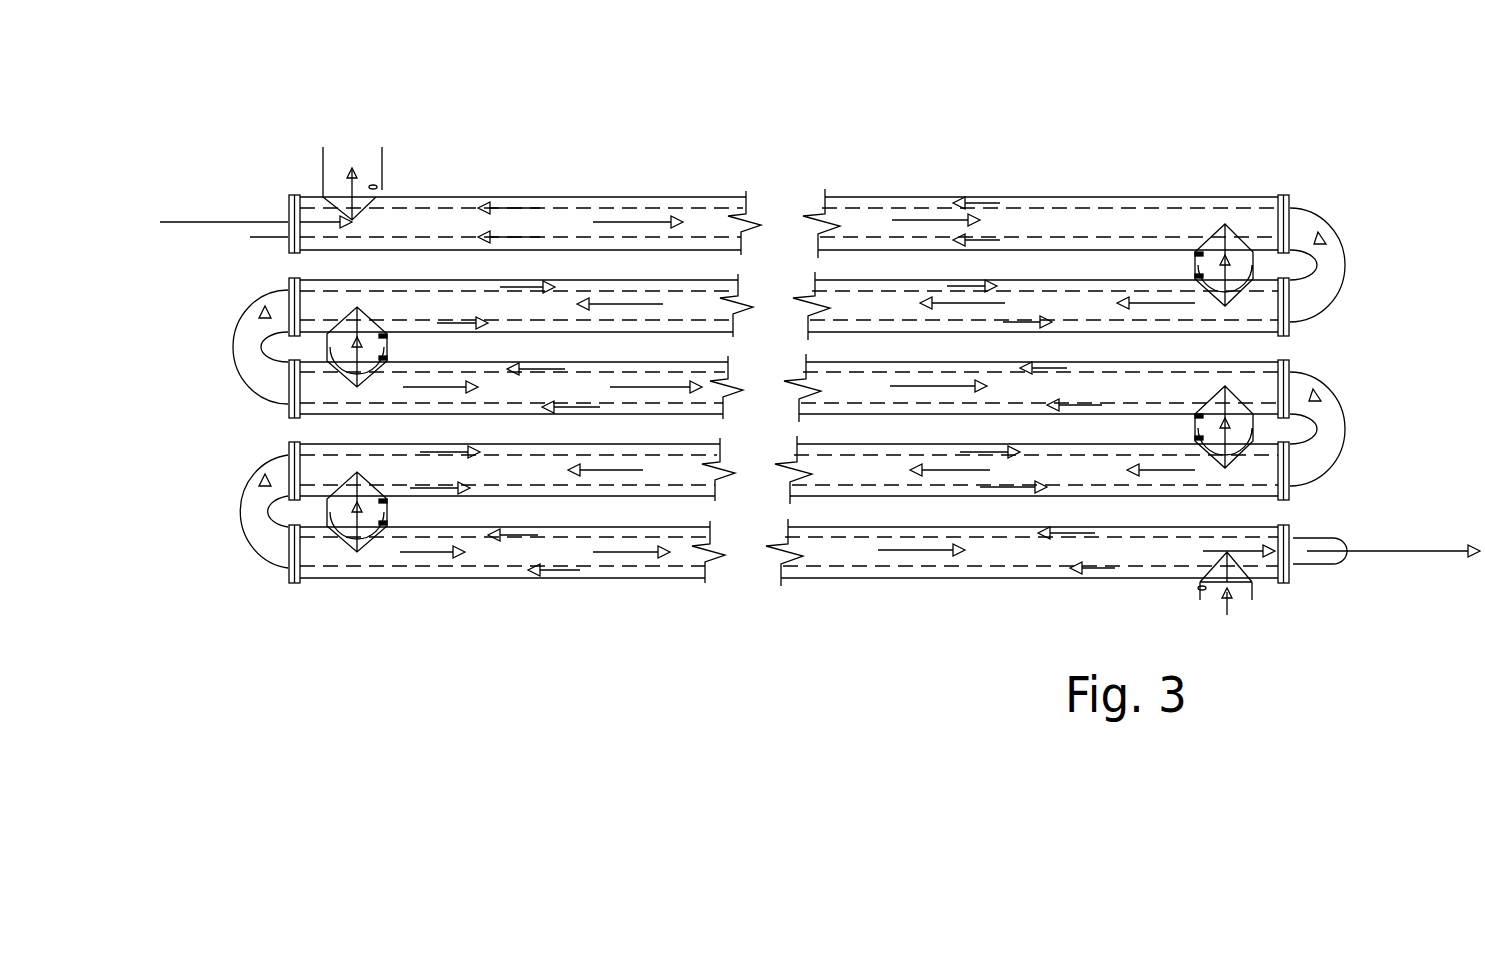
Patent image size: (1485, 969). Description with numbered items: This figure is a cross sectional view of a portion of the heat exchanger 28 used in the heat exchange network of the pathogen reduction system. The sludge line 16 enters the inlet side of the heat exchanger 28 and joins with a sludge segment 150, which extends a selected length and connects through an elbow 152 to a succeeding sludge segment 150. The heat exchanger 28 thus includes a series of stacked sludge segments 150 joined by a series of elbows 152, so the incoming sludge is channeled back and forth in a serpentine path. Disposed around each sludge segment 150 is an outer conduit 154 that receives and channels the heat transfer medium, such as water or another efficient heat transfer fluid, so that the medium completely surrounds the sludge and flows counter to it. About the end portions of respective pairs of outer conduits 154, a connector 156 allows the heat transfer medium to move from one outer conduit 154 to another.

The heat exchanger 28 is at (897, 147).
The sludge line 16 is at (268, 215).
The sludge segment 150 is at (690, 222).
The elbow 152 is at (252, 390).
The outer conduit 154 is at (541, 198).
The connector 156 is at (327, 335).